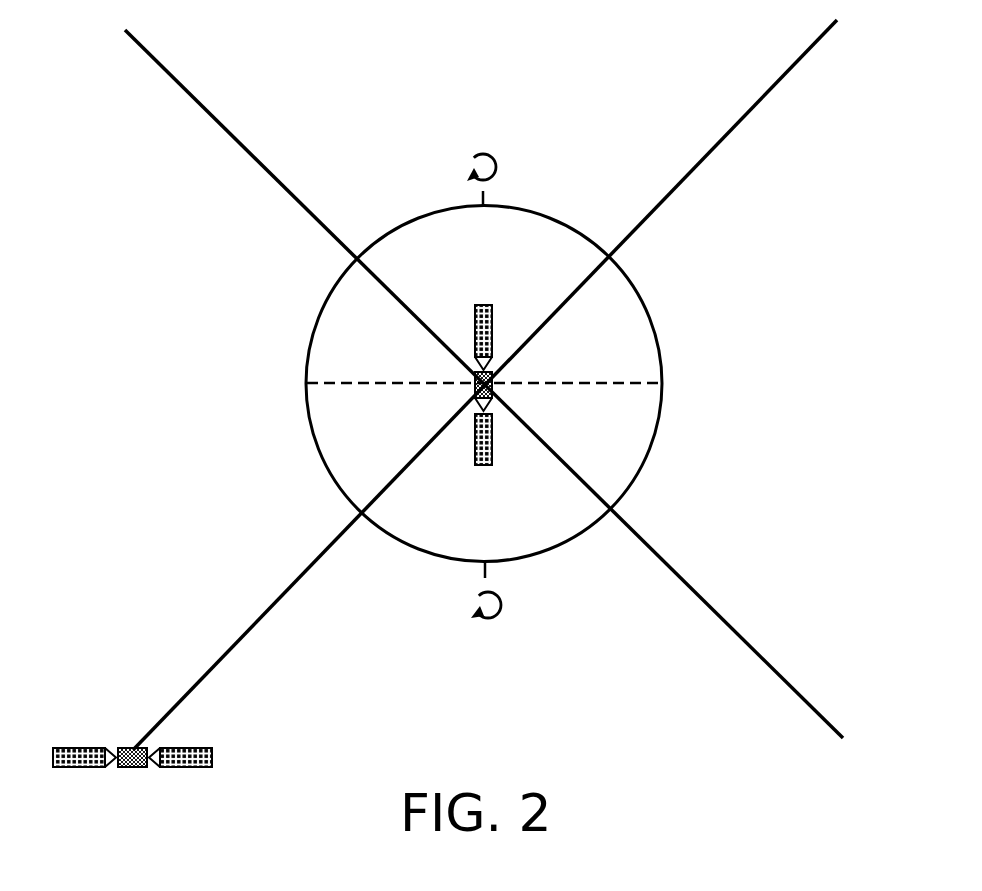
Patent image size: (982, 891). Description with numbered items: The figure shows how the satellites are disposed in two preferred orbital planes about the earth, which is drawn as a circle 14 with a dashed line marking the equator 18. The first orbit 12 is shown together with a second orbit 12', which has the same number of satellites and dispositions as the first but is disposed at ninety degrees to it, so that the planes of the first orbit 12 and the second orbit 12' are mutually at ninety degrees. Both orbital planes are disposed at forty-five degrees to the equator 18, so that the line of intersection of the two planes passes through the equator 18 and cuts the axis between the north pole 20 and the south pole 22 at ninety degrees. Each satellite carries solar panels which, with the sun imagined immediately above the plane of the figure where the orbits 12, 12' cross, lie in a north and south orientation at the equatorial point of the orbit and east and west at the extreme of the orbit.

The first orbit 12 is at (484, 384).
The second orbit 12' is at (495, 385).
The orbit circle 14 is at (567, 525).
The equator 18 is at (664, 383).
The north pole 20 is at (508, 170).
The south pole 22 is at (476, 628).